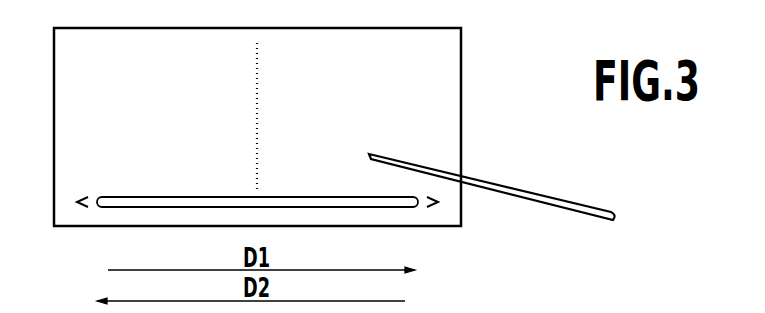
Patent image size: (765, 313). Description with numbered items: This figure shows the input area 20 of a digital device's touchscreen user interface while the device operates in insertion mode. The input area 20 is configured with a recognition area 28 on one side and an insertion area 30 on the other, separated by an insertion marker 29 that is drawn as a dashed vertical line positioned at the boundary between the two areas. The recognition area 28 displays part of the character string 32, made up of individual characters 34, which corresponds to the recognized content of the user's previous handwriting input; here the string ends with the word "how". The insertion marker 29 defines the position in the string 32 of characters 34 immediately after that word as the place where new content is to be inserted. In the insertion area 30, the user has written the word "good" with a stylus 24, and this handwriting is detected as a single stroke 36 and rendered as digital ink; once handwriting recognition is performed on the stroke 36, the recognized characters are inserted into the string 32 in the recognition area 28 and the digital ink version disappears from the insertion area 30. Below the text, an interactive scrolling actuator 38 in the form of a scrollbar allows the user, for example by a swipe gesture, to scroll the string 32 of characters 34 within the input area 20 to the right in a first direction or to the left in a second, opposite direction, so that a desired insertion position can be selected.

The input area 20 is at (462, 72).
The stylus 24 is at (522, 192).
The recognition area 28 is at (128, 212).
The insertion marker 29 is at (258, 66).
The insertion area 30 is at (385, 213).
The character string 32 is at (172, 127).
The characters 34 is at (152, 127).
The stroke 36 is at (315, 135).
The interactive scrolling actuator 38 is at (178, 200).